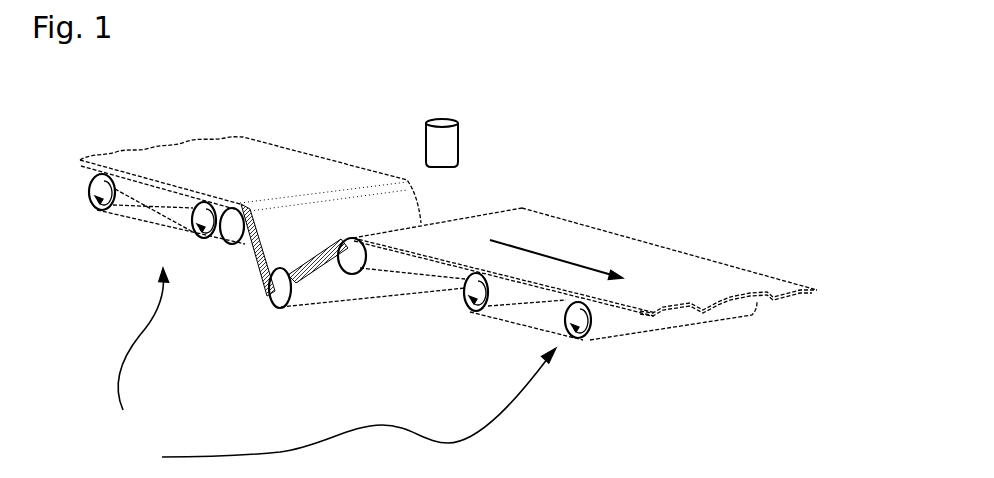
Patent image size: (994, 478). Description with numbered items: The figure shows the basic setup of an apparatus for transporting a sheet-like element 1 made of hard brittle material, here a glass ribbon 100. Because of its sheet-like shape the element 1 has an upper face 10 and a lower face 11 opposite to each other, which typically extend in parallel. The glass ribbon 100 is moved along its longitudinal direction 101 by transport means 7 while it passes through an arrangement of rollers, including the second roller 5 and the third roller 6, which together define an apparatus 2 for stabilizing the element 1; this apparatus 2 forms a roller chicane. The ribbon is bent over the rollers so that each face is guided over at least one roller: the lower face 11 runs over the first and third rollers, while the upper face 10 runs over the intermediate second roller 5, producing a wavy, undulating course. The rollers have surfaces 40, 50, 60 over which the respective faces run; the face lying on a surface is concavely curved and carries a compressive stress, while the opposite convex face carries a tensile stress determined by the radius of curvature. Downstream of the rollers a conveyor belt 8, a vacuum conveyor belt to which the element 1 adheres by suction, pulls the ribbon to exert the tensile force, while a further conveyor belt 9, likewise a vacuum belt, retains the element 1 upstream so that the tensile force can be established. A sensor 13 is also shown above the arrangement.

The sheet-like element 1 is at (679, 226).
The glass ribbon 100 is at (798, 278).
The apparatus for stabilizing 2 is at (494, 51).
The second roller 5 is at (275, 286).
The third roller 6 is at (347, 263).
The transport means 7 is at (336, 370).
The conveyor belt 8 is at (584, 334).
The conveyor belt 9 is at (130, 216).
The upper face 10 is at (573, 243).
The lower face 11 is at (428, 280).
The sensor 13 is at (427, 128).
The surface of first roller 40 is at (250, 240).
The surface of second roller 50 is at (300, 270).
The surface of third roller 60 is at (384, 262).
The longitudinal direction 101 is at (600, 270).